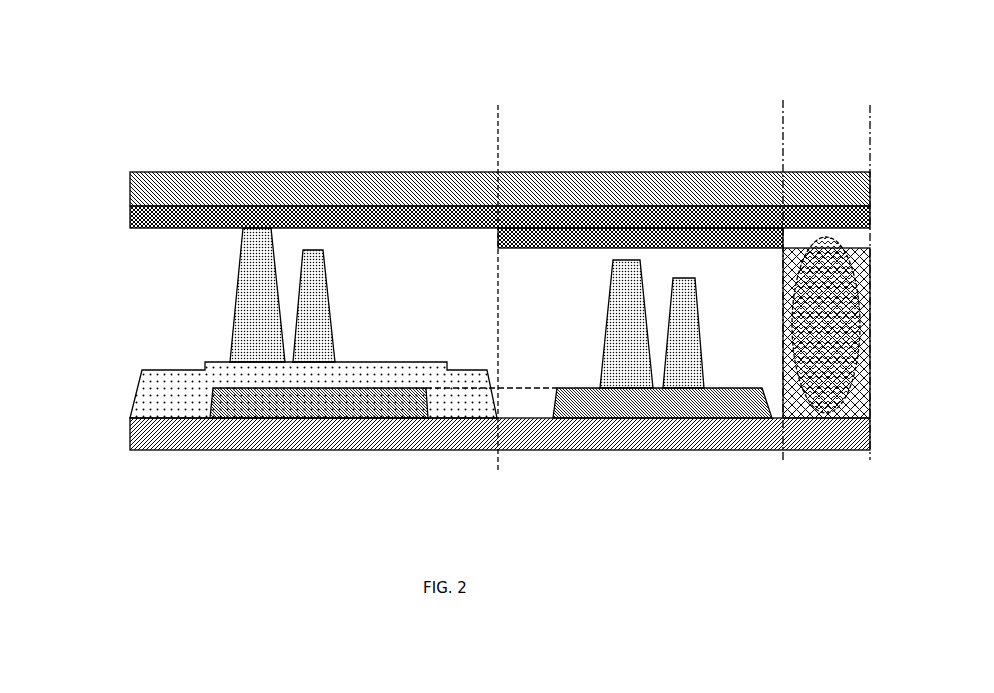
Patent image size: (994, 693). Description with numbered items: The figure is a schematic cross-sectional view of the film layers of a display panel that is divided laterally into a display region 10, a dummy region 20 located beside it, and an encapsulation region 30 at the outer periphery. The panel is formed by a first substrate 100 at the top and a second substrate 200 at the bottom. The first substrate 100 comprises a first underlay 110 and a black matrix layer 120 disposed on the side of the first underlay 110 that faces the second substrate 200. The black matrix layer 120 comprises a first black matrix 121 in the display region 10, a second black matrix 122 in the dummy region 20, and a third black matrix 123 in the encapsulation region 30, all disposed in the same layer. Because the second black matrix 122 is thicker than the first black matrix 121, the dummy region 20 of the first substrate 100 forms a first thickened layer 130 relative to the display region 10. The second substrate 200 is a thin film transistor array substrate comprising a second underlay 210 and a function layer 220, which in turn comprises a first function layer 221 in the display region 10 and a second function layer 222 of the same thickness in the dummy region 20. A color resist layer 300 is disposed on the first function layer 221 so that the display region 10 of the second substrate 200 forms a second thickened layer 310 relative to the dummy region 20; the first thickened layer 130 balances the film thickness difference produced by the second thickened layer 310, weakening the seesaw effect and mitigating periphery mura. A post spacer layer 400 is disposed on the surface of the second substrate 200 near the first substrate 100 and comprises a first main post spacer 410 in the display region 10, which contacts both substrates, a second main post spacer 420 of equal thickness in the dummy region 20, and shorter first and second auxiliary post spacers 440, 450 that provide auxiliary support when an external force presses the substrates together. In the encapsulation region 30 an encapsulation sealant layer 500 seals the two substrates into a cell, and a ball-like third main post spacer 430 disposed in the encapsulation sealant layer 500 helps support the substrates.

The display region 10 is at (385, 135).
The dummy region 20 is at (498, 135).
The encapsulation region 30 is at (863, 138).
The first substrate 100 is at (62, 228).
The first underlay 110 is at (130, 188).
The black matrix layer 120 is at (130, 219).
The first black matrix 121 is at (268, 228).
The second black matrix 122 is at (627, 207).
The third black matrix 123 is at (827, 207).
The first thickened layer 130 is at (498, 248).
The second substrate 200 is at (65, 450).
The second underlay 210 is at (130, 432).
The function layer 220 is at (491, 459).
The first function layer 221 is at (350, 410).
The second function layer 222 is at (662, 441).
The color resist layer 300 is at (182, 405).
The second thickened layer 310 is at (213, 388).
The post spacer layer 400 is at (188, 312).
The first main post spacer 410 is at (243, 280).
The second main post spacer 420 is at (608, 327).
The third main post spacer 430 is at (846, 300).
The first auxiliary post spacer 440 is at (312, 306).
The second auxiliary post spacer 450 is at (680, 352).
The encapsulation sealant layer 500 is at (862, 252).